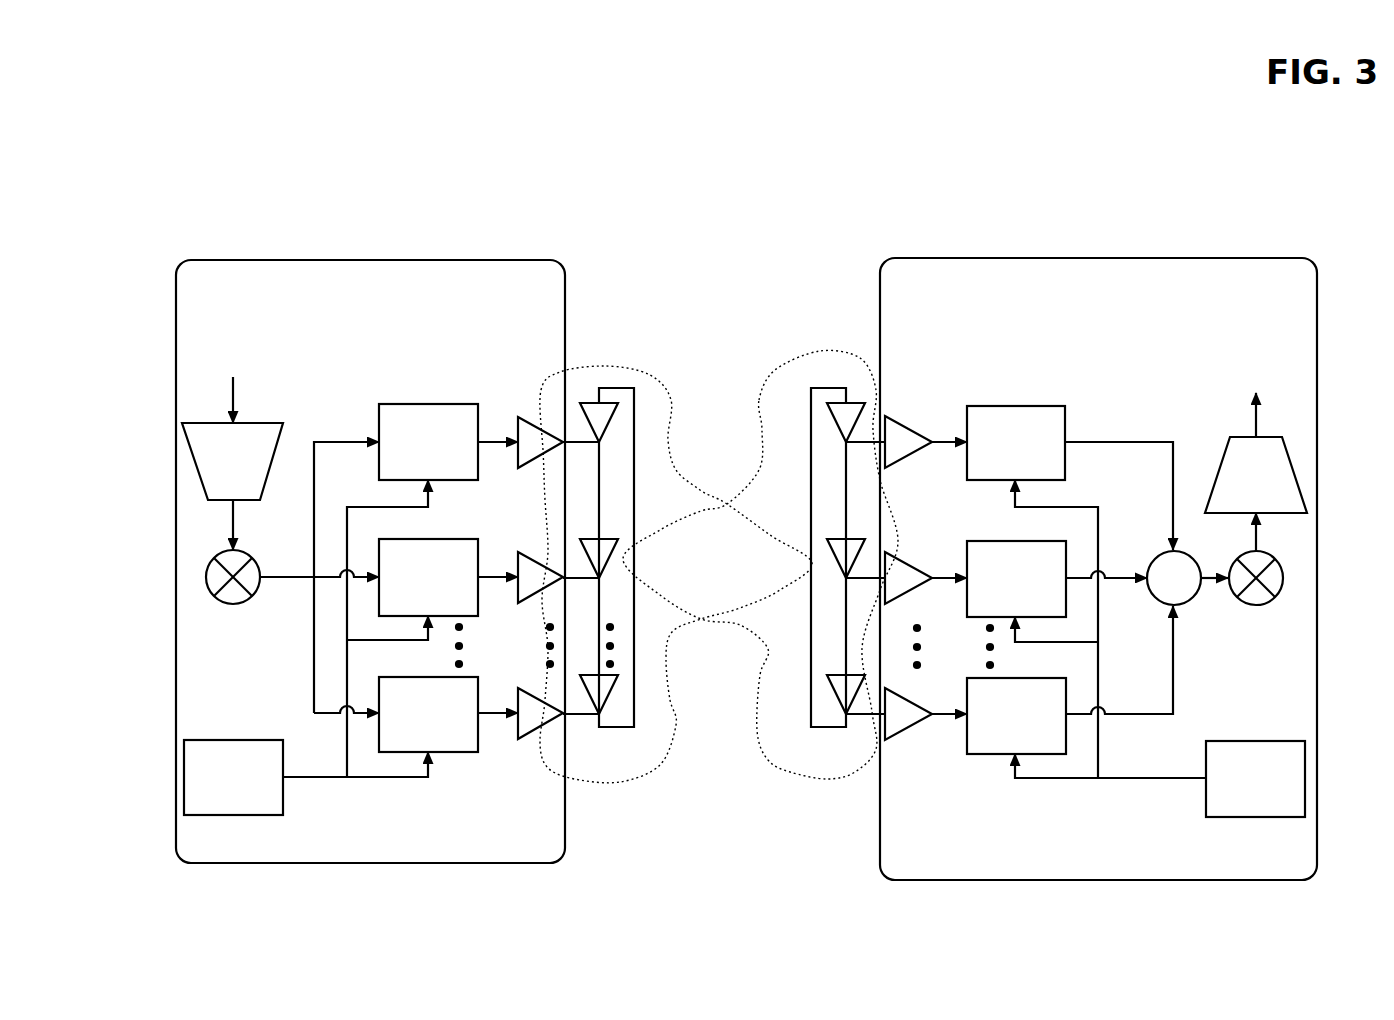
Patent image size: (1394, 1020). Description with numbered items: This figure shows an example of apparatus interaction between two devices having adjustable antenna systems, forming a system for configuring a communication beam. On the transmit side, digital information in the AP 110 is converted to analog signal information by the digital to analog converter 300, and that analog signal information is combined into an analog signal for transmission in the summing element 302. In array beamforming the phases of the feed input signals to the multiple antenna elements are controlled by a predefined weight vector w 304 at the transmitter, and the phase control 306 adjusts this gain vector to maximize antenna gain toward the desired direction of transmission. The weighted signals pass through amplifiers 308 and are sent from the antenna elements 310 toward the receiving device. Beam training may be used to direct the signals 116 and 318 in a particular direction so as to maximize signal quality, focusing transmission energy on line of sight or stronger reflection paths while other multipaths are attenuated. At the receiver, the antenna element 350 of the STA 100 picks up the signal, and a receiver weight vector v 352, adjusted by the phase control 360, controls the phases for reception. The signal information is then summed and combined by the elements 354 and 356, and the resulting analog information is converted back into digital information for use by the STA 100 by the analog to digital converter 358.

The AP 110 is at (175, 383).
The STA 100 is at (1318, 383).
The signal 116 is at (666, 401).
The digital to analog converter (D/A) 300 is at (267, 423).
The summing element 302 is at (250, 604).
The weight vector w 304 is at (379, 424).
The phase control 306 is at (283, 793).
The transmit amplifiers 308 is at (548, 727).
The antenna elements 310 is at (614, 535).
The signal 318 is at (783, 767).
The antenna element 350 is at (831, 427).
The weight vector v 352 is at (1068, 430).
The summing element 354 is at (1193, 605).
The combining element 356 is at (1278, 562).
The analog to digital converter (A/D) 358 is at (1300, 482).
The phase control 360 is at (1203, 802).